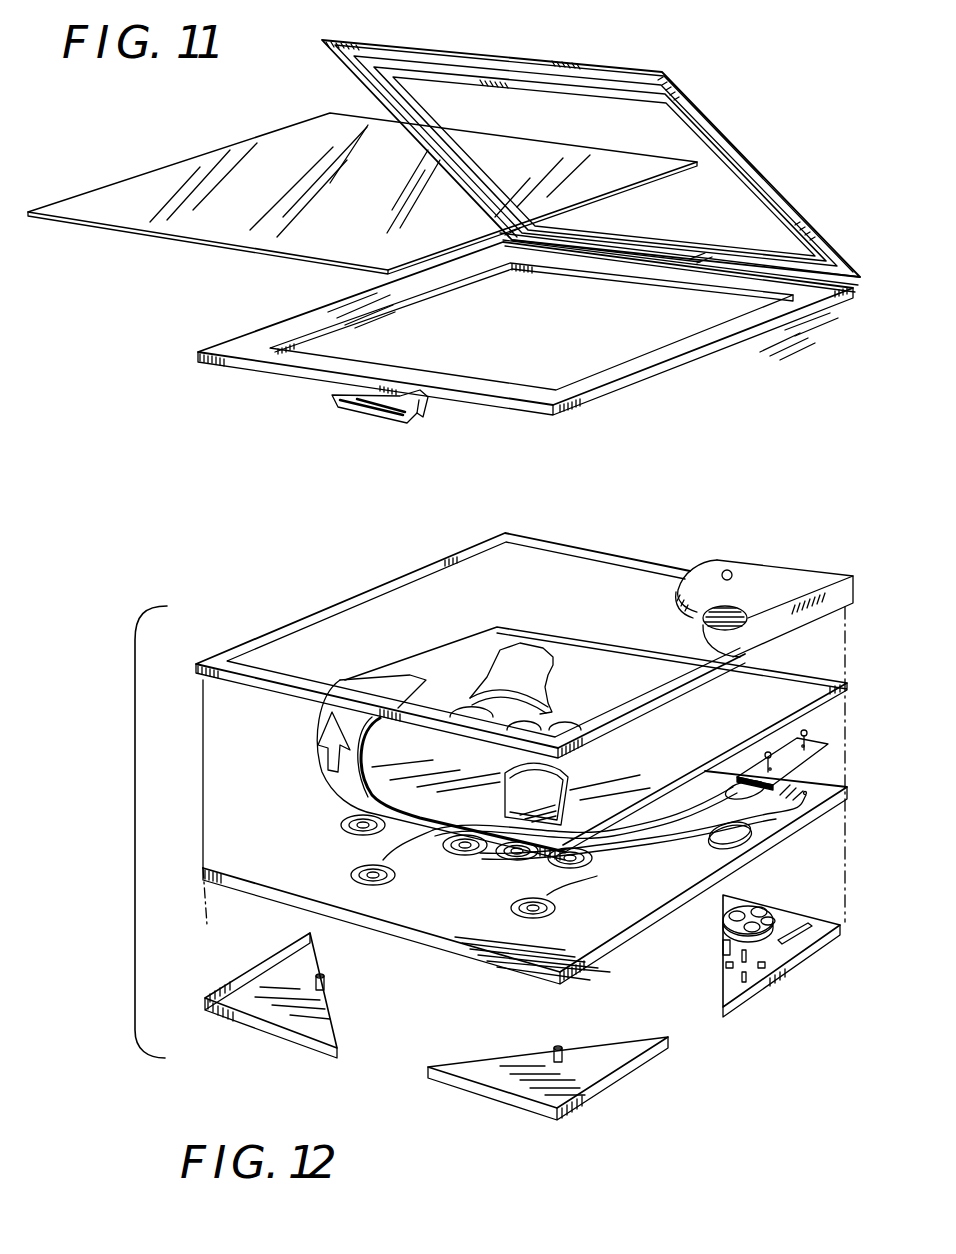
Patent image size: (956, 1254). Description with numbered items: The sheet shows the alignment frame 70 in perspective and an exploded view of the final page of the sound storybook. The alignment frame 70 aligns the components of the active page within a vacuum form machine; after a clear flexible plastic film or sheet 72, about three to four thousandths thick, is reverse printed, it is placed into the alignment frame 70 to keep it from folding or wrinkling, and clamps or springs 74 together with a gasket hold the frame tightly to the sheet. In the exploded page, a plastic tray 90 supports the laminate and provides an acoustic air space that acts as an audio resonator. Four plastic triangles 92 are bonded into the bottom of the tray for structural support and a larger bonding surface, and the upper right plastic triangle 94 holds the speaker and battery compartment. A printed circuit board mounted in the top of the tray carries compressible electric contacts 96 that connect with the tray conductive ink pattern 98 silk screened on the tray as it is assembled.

In FIG. 11, the alignment frame 70 is at (668, 368).
In FIG. 11, the clear flexible plastic film or sheet 72 is at (215, 232).
In FIG. 11, the clamps or springs 74 is at (375, 410).
In FIG. 12, the plastic tray 90 is at (815, 812).
In FIG. 12, the plastic triangles 92 is at (278, 1025).
In FIG. 12, the upper right plastic triangle 94 is at (805, 958).
In FIG. 12, the compressible electric contacts 96 is at (783, 783).
In FIG. 12, the tray conductive ink pattern 98 is at (385, 882).